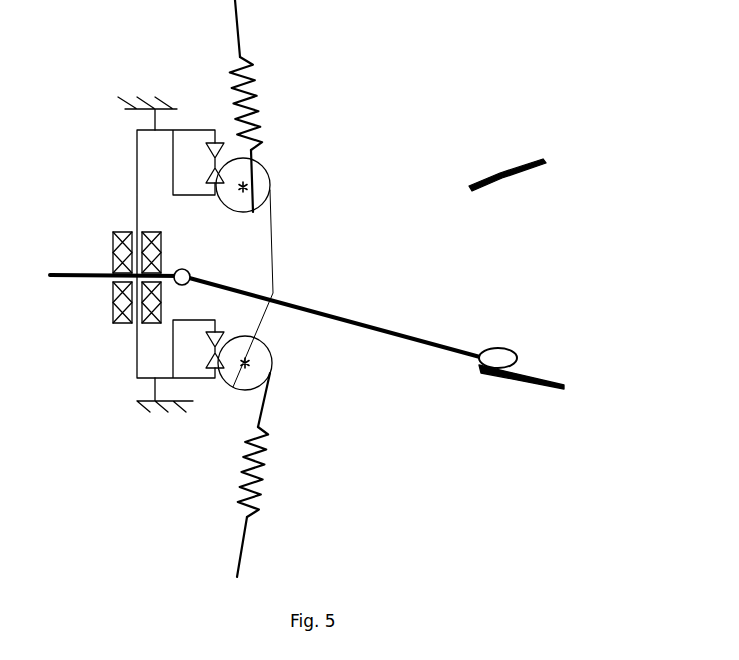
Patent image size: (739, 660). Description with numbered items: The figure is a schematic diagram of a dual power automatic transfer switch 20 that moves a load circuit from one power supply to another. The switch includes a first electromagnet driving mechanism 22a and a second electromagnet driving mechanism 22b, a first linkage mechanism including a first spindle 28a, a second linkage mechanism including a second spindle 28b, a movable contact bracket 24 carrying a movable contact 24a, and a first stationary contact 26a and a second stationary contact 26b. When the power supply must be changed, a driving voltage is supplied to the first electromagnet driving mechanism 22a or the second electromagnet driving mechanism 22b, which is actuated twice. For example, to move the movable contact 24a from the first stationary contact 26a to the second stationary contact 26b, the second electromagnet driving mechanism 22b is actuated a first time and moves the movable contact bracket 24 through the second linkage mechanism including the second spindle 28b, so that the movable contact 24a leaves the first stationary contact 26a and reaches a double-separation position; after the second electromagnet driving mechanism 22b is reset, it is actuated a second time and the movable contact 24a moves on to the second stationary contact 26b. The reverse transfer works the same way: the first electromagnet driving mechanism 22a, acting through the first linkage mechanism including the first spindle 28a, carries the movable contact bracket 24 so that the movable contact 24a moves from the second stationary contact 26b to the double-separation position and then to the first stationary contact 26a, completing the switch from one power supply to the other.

The dual power automatic transfer switch 20 is at (444, 46).
The first electromagnet driving mechanism 22a is at (113, 232).
The second electromagnet driving mechanism 22b is at (113, 323).
The movable contact bracket 24 is at (350, 320).
The movable contact 24a is at (500, 349).
The first stationary contact 26a is at (502, 192).
The second stationary contact 26b is at (515, 370).
The first spindle 28a is at (257, 173).
The second spindle 28b is at (267, 360).